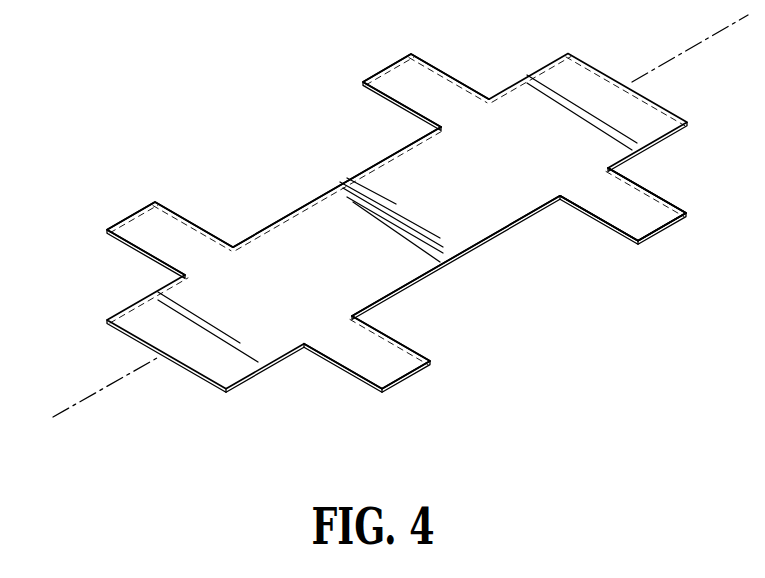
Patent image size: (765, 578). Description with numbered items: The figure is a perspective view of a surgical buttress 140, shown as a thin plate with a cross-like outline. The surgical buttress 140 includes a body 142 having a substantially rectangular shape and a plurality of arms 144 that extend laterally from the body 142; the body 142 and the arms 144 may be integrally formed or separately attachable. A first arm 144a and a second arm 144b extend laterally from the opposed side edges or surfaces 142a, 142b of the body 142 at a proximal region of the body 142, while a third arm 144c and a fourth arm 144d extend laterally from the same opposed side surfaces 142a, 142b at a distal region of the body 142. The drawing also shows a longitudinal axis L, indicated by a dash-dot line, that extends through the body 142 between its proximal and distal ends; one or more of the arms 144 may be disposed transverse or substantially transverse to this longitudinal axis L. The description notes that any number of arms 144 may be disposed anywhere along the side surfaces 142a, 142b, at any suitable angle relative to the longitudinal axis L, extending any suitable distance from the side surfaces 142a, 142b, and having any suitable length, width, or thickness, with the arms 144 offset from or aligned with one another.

The surgical buttress 140 is at (581, 80).
The body 142 is at (483, 232).
The side surface 142a is at (403, 293).
The side surface 142b is at (322, 190).
The arms 144 is at (641, 188).
The first arm 144a is at (667, 227).
The second arm 144b is at (400, 80).
The third arm 144c is at (396, 368).
The fourth arm 144d is at (143, 227).
The longitudinal axis L is at (87, 397).